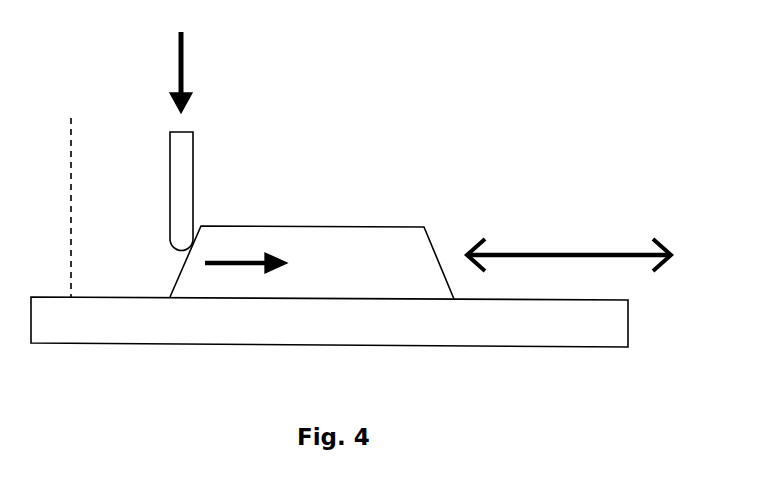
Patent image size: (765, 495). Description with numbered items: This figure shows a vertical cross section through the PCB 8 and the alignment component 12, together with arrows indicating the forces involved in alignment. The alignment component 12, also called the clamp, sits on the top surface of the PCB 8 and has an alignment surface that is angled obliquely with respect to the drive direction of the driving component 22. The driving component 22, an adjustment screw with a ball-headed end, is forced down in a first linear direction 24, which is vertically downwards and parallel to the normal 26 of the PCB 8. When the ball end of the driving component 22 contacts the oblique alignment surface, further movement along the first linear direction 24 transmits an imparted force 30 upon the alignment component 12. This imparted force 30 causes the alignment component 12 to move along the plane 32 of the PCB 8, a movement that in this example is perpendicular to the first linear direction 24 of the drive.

The PCB 8 is at (554, 348).
The alignment component 12 is at (382, 226).
The driving component 22 is at (194, 152).
The first linear direction 24 is at (173, 59).
The normal of the PCB 26 is at (57, 193).
The imparted force 30 is at (262, 265).
The plane of the PCB 32 is at (573, 253).